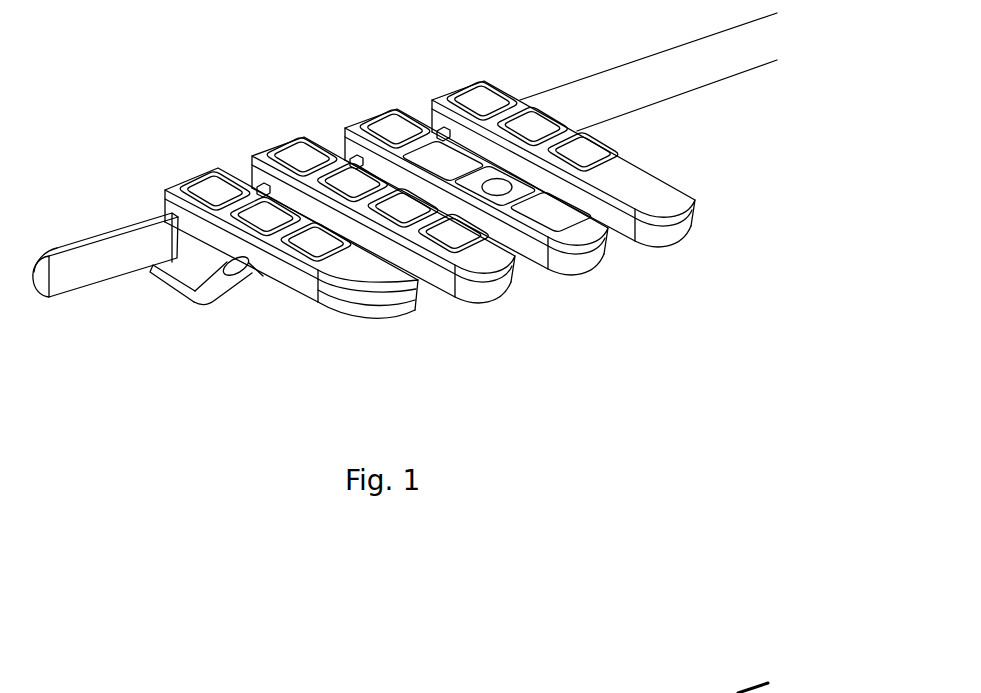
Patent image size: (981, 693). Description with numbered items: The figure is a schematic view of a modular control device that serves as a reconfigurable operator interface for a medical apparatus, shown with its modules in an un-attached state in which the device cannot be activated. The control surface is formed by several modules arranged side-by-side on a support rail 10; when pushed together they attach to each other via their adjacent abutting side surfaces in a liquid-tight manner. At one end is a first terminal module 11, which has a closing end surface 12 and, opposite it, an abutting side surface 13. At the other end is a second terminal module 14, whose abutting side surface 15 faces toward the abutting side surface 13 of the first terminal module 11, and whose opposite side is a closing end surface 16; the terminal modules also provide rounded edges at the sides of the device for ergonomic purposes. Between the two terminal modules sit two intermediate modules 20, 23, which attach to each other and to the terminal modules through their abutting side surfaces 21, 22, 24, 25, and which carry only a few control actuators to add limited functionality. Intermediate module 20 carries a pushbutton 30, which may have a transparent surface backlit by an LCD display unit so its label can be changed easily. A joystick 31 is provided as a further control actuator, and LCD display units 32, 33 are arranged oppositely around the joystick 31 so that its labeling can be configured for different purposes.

The support rail 10 is at (77, 277).
The first terminal module 11 is at (293, 245).
The closing end surface 12 is at (272, 265).
The abutting side surface 13 is at (434, 310).
The second terminal module 14 is at (589, 160).
The abutting side surface 15 is at (643, 238).
The closing end surface 16 is at (650, 218).
The intermediate module 20 is at (386, 244).
The abutting side surface 21 is at (455, 290).
The abutting side surface 22 is at (520, 278).
The intermediate module 23 is at (489, 209).
The abutting side surface 24 is at (537, 252).
The abutting side surface 25 is at (609, 243).
The pushbutton 30 is at (295, 160).
The joystick 31 is at (497, 187).
The LCD display unit 32 is at (430, 160).
The LCD display unit 33 is at (548, 213).